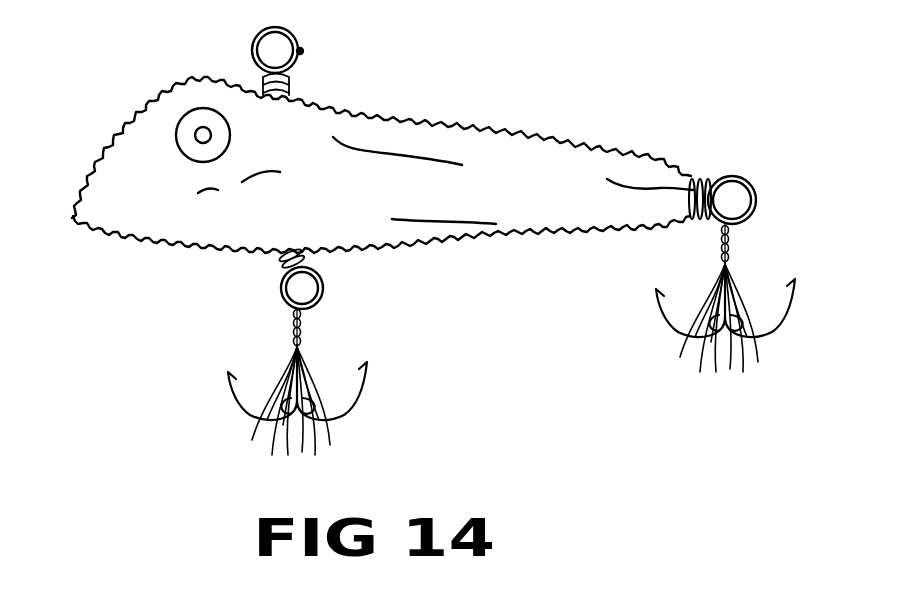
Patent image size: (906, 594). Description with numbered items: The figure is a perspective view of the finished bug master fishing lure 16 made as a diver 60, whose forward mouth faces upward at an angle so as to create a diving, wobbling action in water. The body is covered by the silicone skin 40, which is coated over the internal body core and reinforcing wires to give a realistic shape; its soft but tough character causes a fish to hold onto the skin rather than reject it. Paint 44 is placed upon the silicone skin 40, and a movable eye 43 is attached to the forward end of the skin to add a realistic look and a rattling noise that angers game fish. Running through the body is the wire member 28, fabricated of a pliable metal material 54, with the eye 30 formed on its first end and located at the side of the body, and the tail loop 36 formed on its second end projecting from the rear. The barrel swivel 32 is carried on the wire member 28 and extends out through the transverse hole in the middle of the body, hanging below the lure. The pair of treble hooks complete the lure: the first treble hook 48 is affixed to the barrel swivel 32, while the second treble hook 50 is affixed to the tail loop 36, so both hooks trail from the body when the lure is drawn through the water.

The bug master fishing lure 16 is at (382, 170).
The wire member 28 is at (706, 176).
The eye 30 is at (252, 52).
The barrel swivel 32 is at (280, 262).
The tail loop 36 is at (742, 177).
The silicone skin 40 is at (592, 143).
The movable eyes 43 is at (198, 116).
The paint 44 is at (448, 225).
The first treble hook 48 is at (372, 390).
The second treble hook 50 is at (658, 305).
The pliable metal material 54 is at (304, 51).
The diver 60 is at (446, 124).